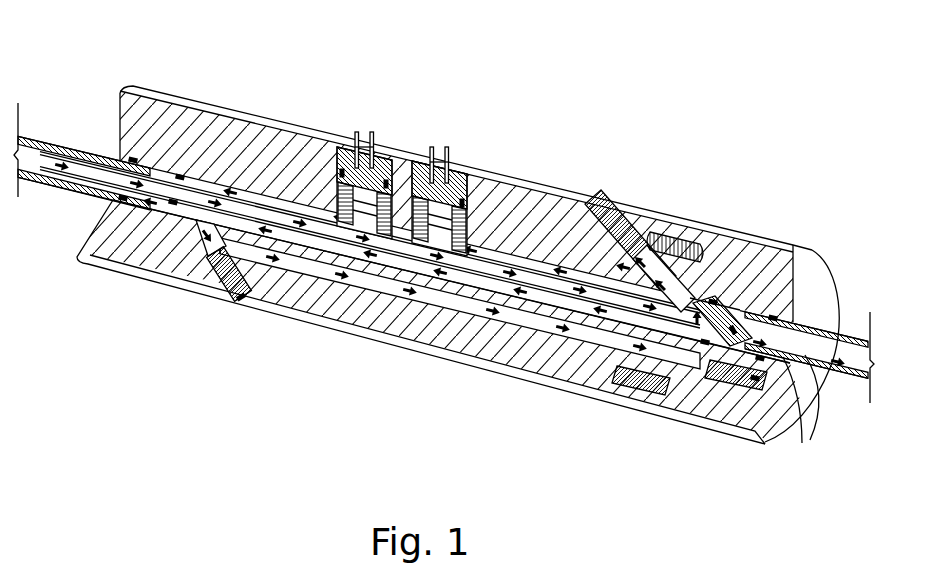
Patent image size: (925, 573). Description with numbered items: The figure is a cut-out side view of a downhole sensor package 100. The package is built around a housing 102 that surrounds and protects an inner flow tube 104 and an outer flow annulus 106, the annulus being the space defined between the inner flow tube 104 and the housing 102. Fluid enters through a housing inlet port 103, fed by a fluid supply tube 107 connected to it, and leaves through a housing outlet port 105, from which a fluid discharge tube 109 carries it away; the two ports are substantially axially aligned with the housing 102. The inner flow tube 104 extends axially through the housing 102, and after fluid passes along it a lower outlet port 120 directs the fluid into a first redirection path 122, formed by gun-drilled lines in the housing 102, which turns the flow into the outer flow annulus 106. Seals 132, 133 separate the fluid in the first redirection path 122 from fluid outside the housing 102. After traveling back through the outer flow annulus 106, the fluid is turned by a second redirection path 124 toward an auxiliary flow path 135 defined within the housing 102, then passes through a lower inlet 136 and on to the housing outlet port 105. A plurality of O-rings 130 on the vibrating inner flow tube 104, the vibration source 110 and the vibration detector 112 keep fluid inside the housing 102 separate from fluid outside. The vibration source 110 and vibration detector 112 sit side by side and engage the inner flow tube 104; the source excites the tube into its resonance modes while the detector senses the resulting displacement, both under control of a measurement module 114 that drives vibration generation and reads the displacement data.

The downhole sensor package 100 is at (701, 63).
The housing 102 is at (78, 264).
The housing inlet port 103 is at (112, 176).
The inner flow tube 104 is at (257, 214).
The housing outlet port 105 is at (783, 357).
The outer flow annulus 106 is at (330, 253).
The fluid supply tube 107 is at (41, 146).
The fluid discharge tube 109 is at (847, 343).
The vibration source 110 is at (347, 146).
The vibration detector 112 is at (460, 172).
The measurement module 114 is at (457, 170).
The lower outlet port 120 is at (690, 300).
The first redirection path 122 is at (688, 292).
The second redirection path 124 is at (210, 252).
The O-rings 130 is at (133, 157).
The seal 132 is at (613, 220).
The seal 133 is at (683, 233).
The auxiliary flow path 135 is at (458, 306).
The lower inlet 136 is at (733, 344).